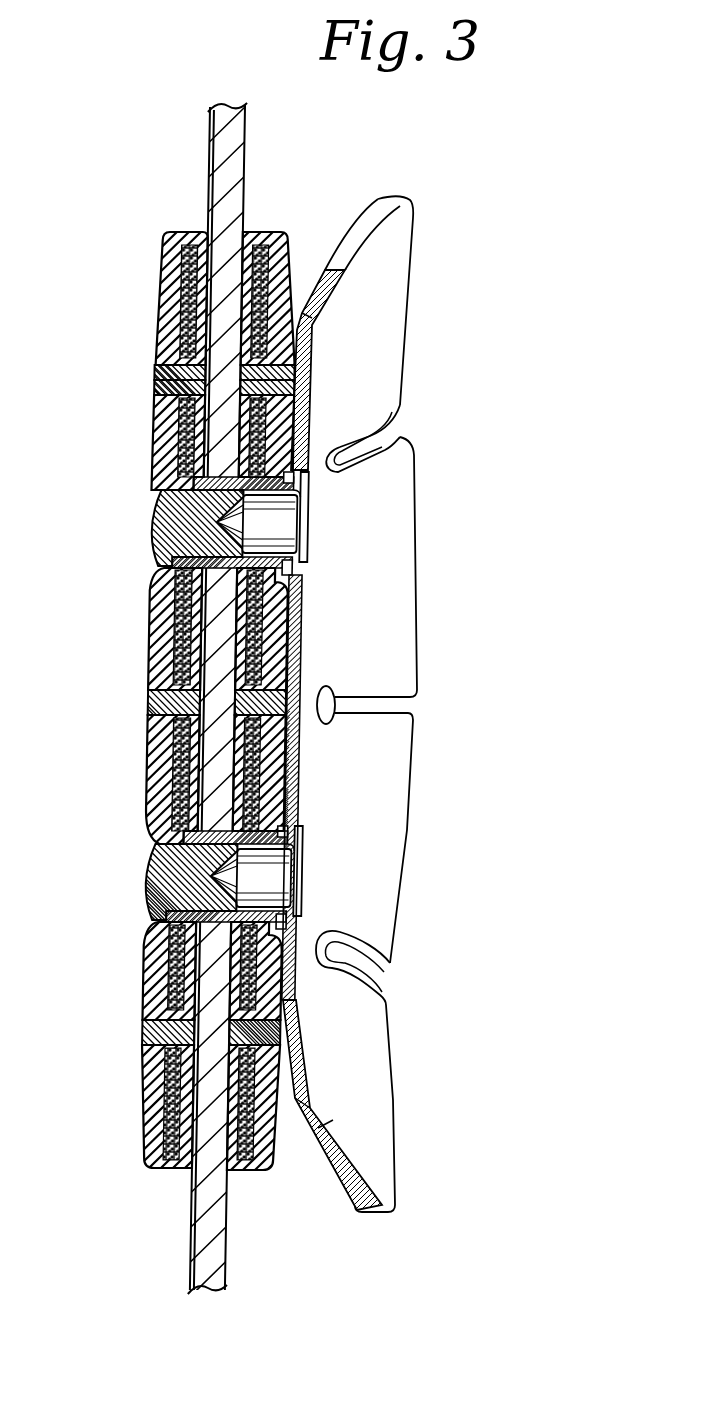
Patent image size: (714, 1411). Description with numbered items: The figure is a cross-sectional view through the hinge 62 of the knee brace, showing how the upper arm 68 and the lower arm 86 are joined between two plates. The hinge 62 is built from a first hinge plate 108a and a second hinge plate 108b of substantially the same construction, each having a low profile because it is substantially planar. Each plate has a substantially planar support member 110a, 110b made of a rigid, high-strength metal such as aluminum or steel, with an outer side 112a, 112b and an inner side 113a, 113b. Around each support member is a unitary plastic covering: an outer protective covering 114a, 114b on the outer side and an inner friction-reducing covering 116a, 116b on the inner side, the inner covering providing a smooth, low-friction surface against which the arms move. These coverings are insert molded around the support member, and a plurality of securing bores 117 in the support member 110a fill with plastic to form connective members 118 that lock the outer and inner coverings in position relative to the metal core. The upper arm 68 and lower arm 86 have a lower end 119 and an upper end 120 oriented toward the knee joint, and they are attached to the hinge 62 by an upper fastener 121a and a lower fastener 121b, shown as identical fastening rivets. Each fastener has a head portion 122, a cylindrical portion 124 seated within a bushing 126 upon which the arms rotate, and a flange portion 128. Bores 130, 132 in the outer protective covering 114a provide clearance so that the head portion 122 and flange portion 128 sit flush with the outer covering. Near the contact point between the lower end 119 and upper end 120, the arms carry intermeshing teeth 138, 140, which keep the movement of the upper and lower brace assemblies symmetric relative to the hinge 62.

The hinge 62 is at (310, 145).
The upper arm 68 is at (240, 134).
The lower arm 86 is at (197, 1220).
The first hinge plate 108a is at (243, 1175).
The second hinge plate 108b is at (160, 287).
The support member 110a is at (265, 338).
The support member 110b is at (183, 407).
The outer side 112a is at (258, 1062).
The outer side 112b is at (160, 1082).
The inner side 113a is at (250, 1127).
The inner side 113b is at (165, 1145).
The outer protective covering 114a is at (297, 243).
The outer protective covering 114b is at (164, 257).
The inner friction-reducing covering 116a is at (262, 1010).
The inner friction-reducing covering 116b is at (143, 1013).
The securing bores 117 is at (157, 367).
The connective members 118 is at (160, 378).
The lower end 119 is at (195, 672).
The upper end 120 is at (148, 723).
The upper fastener 121a is at (152, 573).
The lower fastener 121b is at (148, 853).
The head portion 122 is at (160, 495).
The cylindrical portion 124 is at (197, 528).
The bushing 126 is at (215, 475).
The flange portion 128 is at (298, 558).
The bore 130 is at (157, 583).
The bore 132 is at (290, 590).
The intermeshing teeth 138 is at (150, 703).
The intermeshing teeth 140 is at (290, 682).